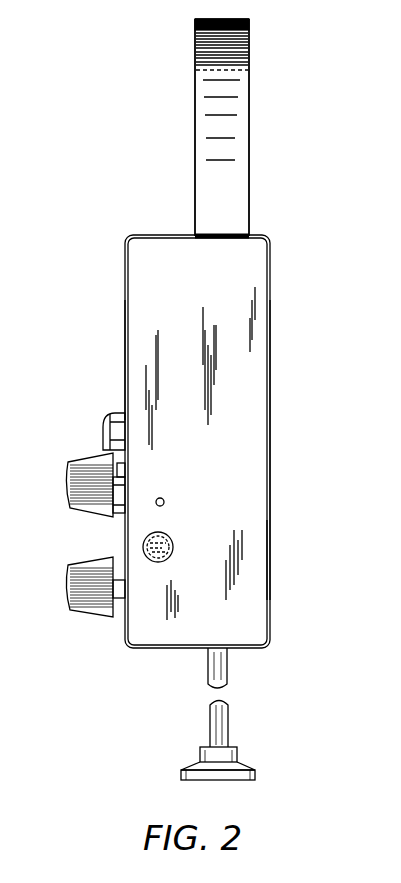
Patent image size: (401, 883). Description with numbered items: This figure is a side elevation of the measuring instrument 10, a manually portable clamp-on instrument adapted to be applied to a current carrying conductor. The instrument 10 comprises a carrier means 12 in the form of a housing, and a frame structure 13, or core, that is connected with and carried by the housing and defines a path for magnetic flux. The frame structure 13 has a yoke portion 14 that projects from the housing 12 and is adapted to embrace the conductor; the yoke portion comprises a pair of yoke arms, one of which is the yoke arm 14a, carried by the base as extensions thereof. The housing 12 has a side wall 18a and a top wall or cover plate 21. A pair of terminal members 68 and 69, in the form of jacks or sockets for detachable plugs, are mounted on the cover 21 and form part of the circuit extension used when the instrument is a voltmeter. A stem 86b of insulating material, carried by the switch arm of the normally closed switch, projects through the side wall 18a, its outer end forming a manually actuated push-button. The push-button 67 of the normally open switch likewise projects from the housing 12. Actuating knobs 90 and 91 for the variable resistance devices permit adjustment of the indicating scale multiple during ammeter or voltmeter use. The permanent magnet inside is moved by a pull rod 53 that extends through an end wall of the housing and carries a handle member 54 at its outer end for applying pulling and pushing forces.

The measuring instrument 10 is at (253, 437).
The carrier means 12 is at (256, 521).
The frame structure 13 is at (222, 163).
The yoke portion 14 is at (240, 82).
The yoke arm 14a is at (240, 114).
The side wall 18a is at (256, 568).
The top wall or cover plate 21 is at (124, 358).
The pull rod 53 is at (212, 726).
The handle member 54 is at (248, 771).
The push-button 67 is at (165, 546).
The terminal member 68 is at (104, 430).
The terminal member 69 is at (100, 515).
The stem 86b is at (164, 499).
The actuating knob 90 is at (78, 492).
The actuating knob 91 is at (82, 610).